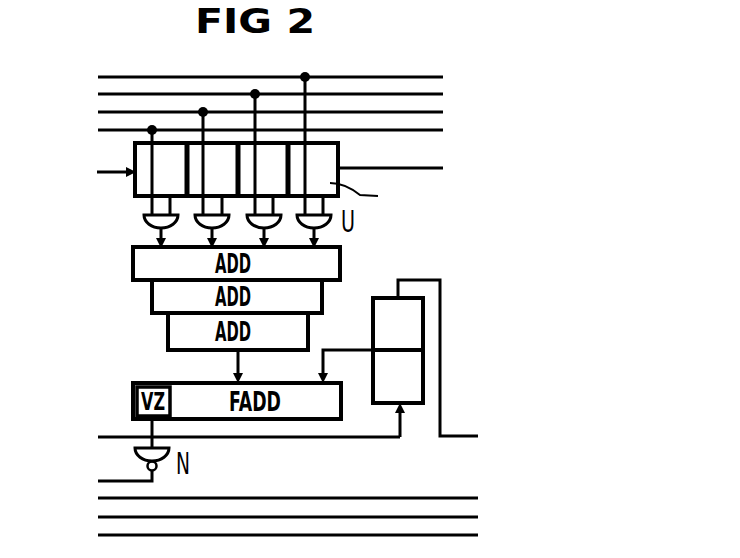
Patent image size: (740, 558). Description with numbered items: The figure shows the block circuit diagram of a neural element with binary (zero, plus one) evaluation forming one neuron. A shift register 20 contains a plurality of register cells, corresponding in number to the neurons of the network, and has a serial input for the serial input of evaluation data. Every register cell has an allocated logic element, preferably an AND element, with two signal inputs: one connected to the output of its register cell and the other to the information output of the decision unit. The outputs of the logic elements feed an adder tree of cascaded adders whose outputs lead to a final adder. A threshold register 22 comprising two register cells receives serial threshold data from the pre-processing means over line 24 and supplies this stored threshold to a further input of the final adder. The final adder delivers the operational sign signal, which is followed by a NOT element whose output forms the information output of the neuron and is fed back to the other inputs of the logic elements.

The shift register 20 is at (132, 194).
The threshold register 22 is at (423, 350).
The line 24 is at (110, 437).